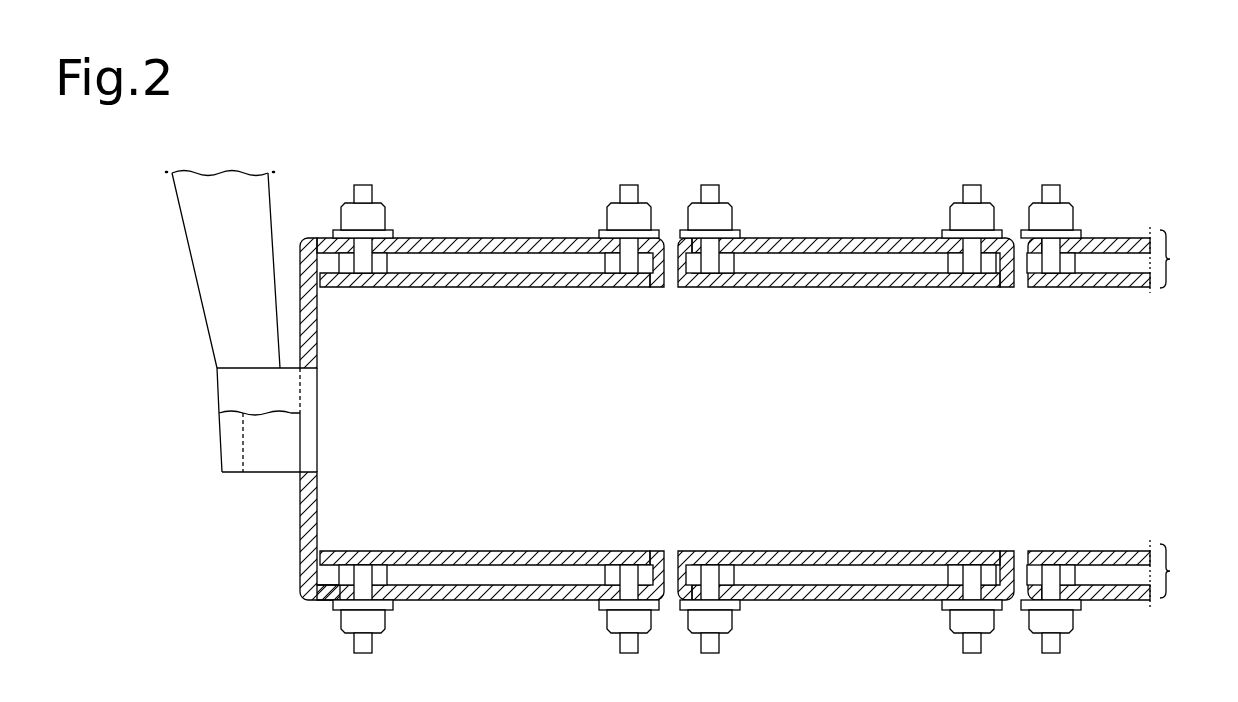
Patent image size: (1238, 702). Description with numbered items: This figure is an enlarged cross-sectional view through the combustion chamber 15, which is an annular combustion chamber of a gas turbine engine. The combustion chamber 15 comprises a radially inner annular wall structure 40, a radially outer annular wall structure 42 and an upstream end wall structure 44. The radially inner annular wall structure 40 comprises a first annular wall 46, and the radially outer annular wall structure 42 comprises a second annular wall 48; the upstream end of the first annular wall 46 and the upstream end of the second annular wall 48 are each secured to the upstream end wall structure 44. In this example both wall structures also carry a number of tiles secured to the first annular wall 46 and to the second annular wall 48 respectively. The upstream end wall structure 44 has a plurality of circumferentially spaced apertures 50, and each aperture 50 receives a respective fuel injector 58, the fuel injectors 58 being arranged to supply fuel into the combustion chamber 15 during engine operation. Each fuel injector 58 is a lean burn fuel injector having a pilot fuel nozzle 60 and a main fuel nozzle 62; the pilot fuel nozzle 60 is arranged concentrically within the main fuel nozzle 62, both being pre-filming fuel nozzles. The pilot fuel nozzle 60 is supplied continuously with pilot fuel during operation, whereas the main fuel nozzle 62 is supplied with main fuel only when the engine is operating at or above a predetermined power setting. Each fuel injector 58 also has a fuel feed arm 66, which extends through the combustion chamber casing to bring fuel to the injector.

The combustion chamber 15 is at (906, 174).
The radially inner annular wall structure 40 is at (763, 583).
The radially outer annular wall structure 42 is at (764, 257).
The upstream end wall structure 44 is at (298, 530).
The first annular wall 46 is at (733, 575).
The second annular wall 48 is at (873, 237).
The aperture 50 is at (307, 373).
The fuel injector 58 is at (233, 427).
The pilot fuel nozzle 60 is at (312, 425).
The main fuel nozzle 62 is at (318, 458).
The fuel feed arm 66 is at (227, 290).